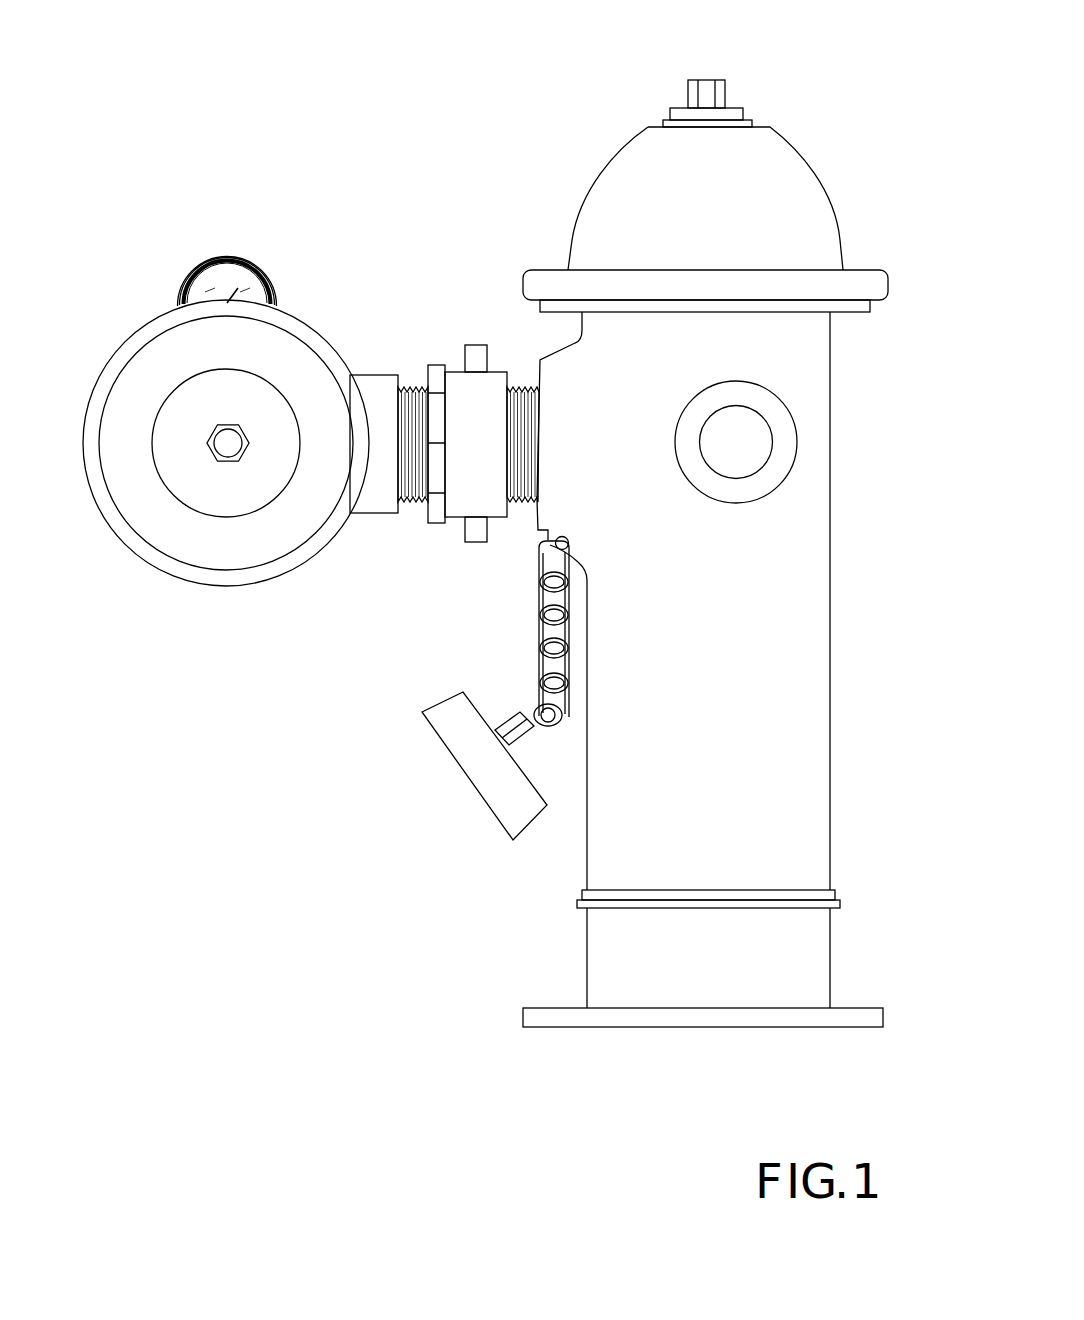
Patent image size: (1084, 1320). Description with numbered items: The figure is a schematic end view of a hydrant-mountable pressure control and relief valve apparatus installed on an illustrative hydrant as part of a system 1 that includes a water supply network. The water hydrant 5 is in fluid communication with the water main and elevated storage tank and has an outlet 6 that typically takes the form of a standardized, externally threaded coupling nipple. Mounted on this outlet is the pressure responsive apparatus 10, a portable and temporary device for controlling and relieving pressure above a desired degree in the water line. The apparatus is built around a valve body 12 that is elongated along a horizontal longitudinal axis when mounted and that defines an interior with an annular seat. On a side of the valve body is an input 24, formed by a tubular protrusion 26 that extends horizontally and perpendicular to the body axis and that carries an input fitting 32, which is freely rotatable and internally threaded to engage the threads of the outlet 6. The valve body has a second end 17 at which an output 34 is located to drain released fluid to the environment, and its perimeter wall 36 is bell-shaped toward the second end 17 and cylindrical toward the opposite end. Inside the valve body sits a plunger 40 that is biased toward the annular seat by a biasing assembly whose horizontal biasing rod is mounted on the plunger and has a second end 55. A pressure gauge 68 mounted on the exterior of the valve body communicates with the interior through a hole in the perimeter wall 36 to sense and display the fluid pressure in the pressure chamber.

The system 1 is at (262, 92).
The water hydrant 5 is at (795, 110).
The outlet 6 is at (517, 513).
The pressure responsive apparatus 10 is at (319, 245).
The valve body 12 is at (313, 327).
The second end 17 is at (210, 577).
The input 24 is at (421, 345).
The tubular protrusion 26 is at (377, 373).
The input fitting 32 is at (453, 517).
The output 34 is at (168, 522).
The perimeter wall 36 is at (313, 542).
The plunger 40 is at (233, 500).
The second end 55 is at (227, 445).
The pressure gauge 68 is at (202, 257).